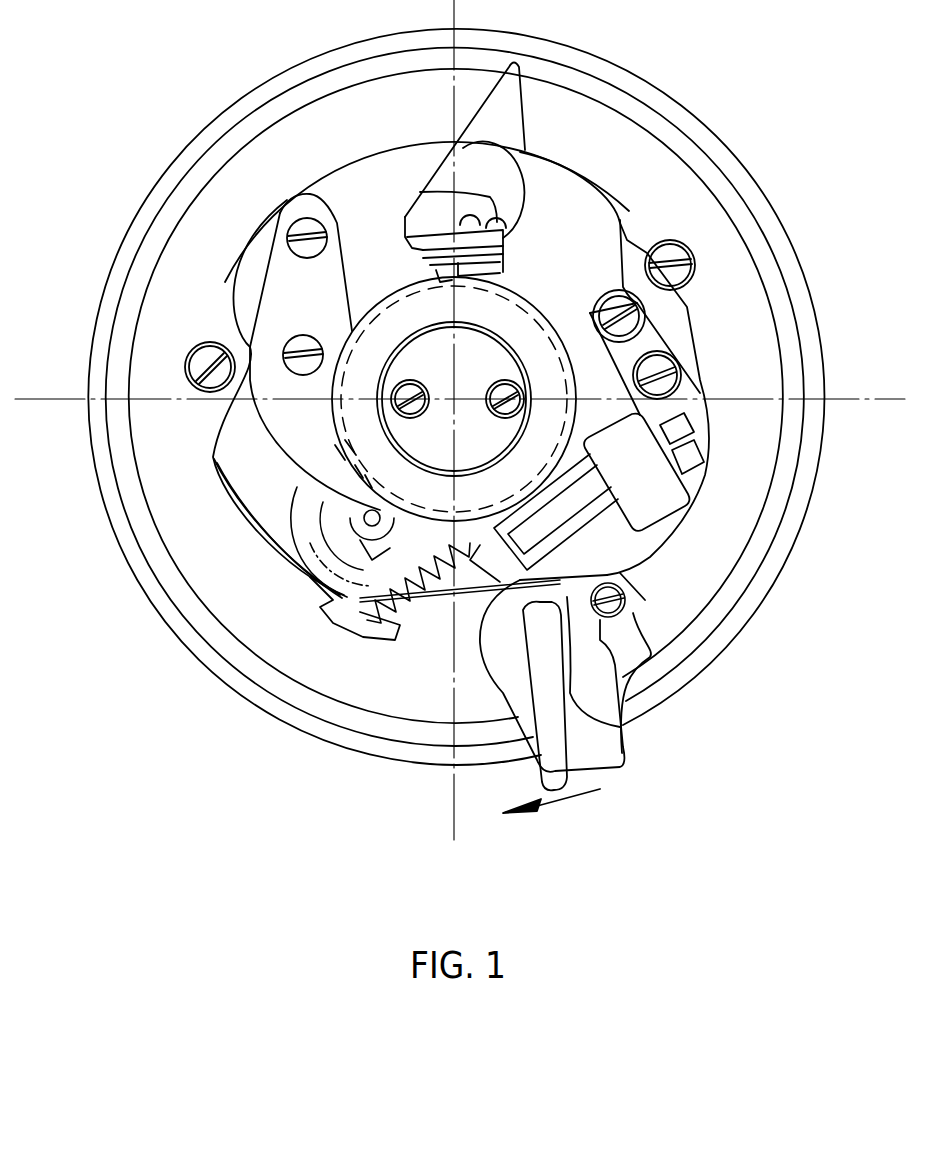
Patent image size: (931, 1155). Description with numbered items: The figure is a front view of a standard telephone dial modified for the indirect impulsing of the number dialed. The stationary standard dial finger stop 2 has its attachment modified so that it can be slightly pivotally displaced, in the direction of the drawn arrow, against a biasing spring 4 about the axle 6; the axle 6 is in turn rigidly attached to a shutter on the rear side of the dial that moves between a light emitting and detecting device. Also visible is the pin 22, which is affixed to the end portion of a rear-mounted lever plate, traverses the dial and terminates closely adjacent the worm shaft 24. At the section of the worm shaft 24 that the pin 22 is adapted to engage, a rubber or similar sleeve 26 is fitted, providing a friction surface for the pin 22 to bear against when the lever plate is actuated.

The finger stop 2 is at (583, 665).
The biasing spring 4 is at (310, 577).
The axle 6 is at (640, 608).
The pin 22 is at (373, 638).
The worm shaft 24 is at (428, 637).
The sleeve 26 is at (508, 560).